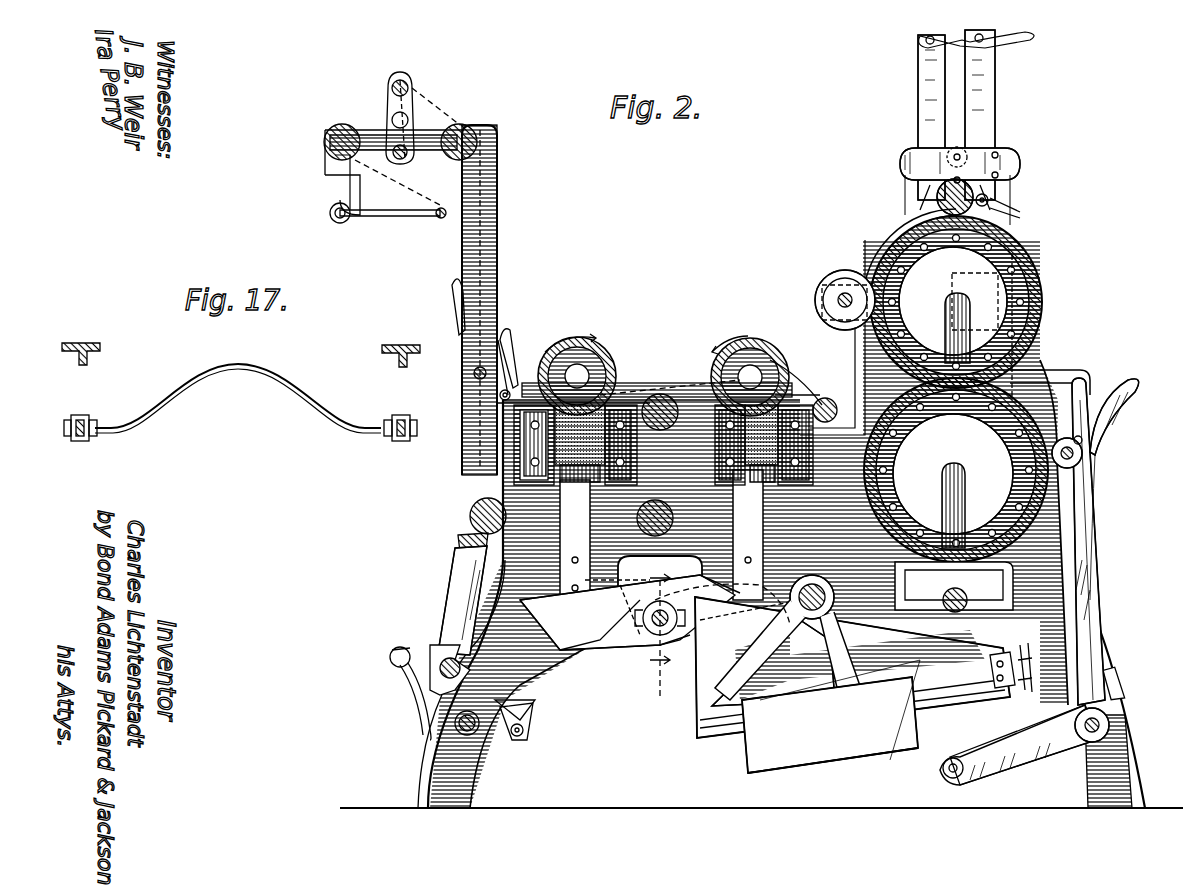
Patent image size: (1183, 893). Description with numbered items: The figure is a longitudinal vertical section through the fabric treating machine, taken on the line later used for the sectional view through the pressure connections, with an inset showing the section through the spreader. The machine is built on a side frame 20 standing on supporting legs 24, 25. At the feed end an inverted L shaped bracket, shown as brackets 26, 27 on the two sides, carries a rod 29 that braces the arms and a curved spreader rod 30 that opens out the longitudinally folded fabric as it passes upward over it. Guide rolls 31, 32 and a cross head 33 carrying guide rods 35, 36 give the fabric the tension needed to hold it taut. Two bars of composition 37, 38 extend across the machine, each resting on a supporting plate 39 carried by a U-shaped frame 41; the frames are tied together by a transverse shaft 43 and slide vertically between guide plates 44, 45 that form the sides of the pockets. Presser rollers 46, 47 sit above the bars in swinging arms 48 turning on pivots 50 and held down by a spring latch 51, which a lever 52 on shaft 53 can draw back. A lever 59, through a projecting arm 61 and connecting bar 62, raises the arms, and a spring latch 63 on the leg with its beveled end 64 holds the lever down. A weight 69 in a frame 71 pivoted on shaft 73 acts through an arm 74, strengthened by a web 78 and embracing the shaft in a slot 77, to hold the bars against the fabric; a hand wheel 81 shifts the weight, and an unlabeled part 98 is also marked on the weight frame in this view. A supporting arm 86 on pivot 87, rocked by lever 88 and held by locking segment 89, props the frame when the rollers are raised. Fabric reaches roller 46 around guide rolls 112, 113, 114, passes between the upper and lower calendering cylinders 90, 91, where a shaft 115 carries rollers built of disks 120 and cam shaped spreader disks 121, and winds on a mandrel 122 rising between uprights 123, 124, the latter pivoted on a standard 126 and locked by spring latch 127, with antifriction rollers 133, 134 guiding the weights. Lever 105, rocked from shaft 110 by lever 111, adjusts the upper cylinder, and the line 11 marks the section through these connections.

In FIG. 2, the section line 11 is at (660, 628).
In FIG. 2, the side frame 20 is at (743, 524).
In FIG. 2, the supporting leg 24 is at (472, 795).
In FIG. 2, the supporting leg 25 is at (1130, 770).
In FIG. 17, the bracket 26 is at (83, 344).
In FIG. 2, the bracket 26 is at (462, 240).
In FIG. 17, the bracket 27 is at (402, 346).
In FIG. 17, the rod 29 is at (78, 442).
In FIG. 17, the spreader rod 30 is at (268, 372).
In FIG. 2, the spreader rod 30 is at (435, 218).
In FIG. 2, the guide roll 31 is at (324, 150).
In FIG. 2, the guide roll 32 is at (455, 160).
In FIG. 2, the cross head 33 is at (388, 108).
In FIG. 2, the guide rod 35 is at (405, 156).
In FIG. 2, the guide rod 36 is at (408, 82).
In FIG. 2, the bar of composition 37 is at (520, 450).
In FIG. 2, the bar of composition 38 is at (800, 385).
In FIG. 2, the supporting plate 39 is at (580, 483).
In FIG. 2, the U-shaped frame 41 is at (630, 612).
In FIG. 2, the transverse shaft 43 is at (655, 630).
In FIG. 2, the guide plate 44 is at (470, 505).
In FIG. 2, the guide plate 45 is at (625, 470).
In FIG. 2, the presser roller 46 is at (603, 355).
In FIG. 2, the presser roller 47 is at (745, 360).
In FIG. 2, the swinging arm 48 is at (640, 386).
In FIG. 2, the pivot 50 is at (832, 398).
In FIG. 2, the spring latch 51 is at (510, 345).
In FIG. 2, the lever 52 is at (454, 300).
In FIG. 2, the shaft 53 is at (474, 373).
In FIG. 2, the lever 59 is at (455, 605).
In FIG. 2, the projecting arm 61 is at (530, 730).
In FIG. 2, the connecting bar 62 is at (535, 708).
In FIG. 2, the spring latch 63 is at (410, 700).
In FIG. 2, the beveled end 64 is at (398, 660).
In FIG. 2, the weight 69 is at (848, 765).
In FIG. 2, the frame 71 is at (950, 705).
In FIG. 2, the shaft 73 is at (790, 630).
In FIG. 2, the arm 74 is at (722, 604).
In FIG. 2, the slot 77 is at (640, 630).
In FIG. 2, the web 78 is at (690, 650).
In FIG. 2, the hand wheel 81 is at (1020, 690).
In FIG. 2, the supporting arm 86 is at (1003, 758).
In FIG. 2, the pivot 87 is at (1110, 725).
In FIG. 2, the lever 88 is at (1085, 558).
In FIG. 2, the locking segment 89 is at (1122, 670).
In FIG. 2, the upper calendering cylinder 90 is at (1000, 285).
In FIG. 2, the lower calendering cylinder 91 is at (956, 470).
In FIG. 2, the plate 98 is at (835, 735).
In FIG. 2, the lever 105 is at (1043, 370).
In FIG. 2, the transverse shaft 110 is at (1075, 457).
In FIG. 2, the lever 111 is at (1118, 380).
In FIG. 2, the guide roll 112 is at (460, 545).
In FIG. 2, the guide roll 113 is at (668, 530).
In FIG. 2, the guide roll 114 is at (655, 430).
In FIG. 2, the shaft 115 is at (838, 300).
In FIG. 2, the disk 120 is at (818, 290).
In FIG. 2, the spreader disk 121 is at (843, 282).
In FIG. 2, the mandrel 122 is at (972, 190).
In FIG. 2, the upright 123 is at (918, 120).
In FIG. 2, the upright 124 is at (995, 105).
In FIG. 2, the standard 126 is at (1014, 207).
In FIG. 2, the spring latch 127 is at (940, 55).
In FIG. 2, the antifriction roller 133 is at (962, 150).
In FIG. 2, the antifriction roller 134 is at (965, 172).